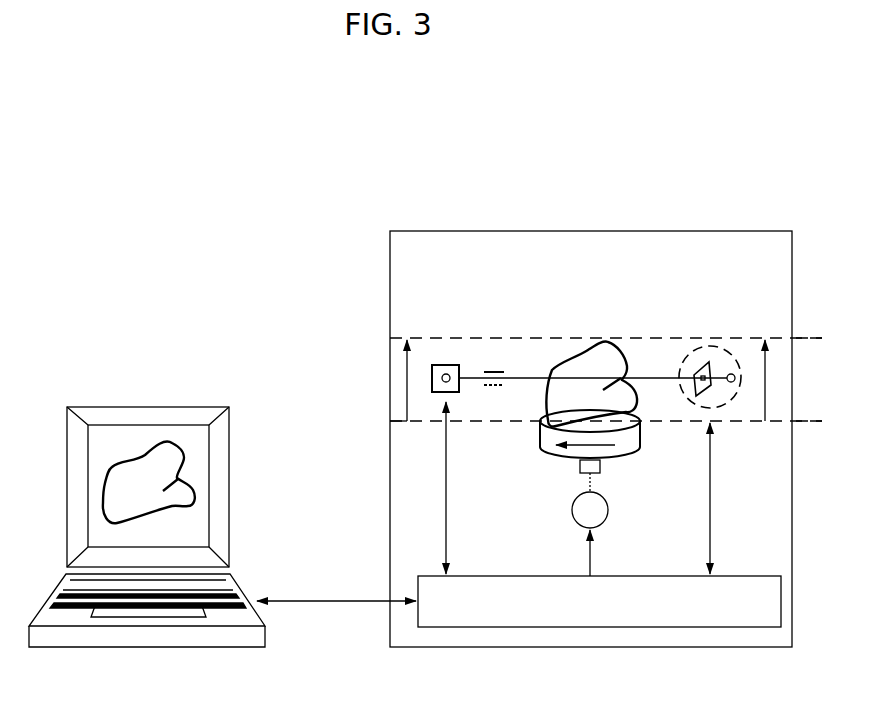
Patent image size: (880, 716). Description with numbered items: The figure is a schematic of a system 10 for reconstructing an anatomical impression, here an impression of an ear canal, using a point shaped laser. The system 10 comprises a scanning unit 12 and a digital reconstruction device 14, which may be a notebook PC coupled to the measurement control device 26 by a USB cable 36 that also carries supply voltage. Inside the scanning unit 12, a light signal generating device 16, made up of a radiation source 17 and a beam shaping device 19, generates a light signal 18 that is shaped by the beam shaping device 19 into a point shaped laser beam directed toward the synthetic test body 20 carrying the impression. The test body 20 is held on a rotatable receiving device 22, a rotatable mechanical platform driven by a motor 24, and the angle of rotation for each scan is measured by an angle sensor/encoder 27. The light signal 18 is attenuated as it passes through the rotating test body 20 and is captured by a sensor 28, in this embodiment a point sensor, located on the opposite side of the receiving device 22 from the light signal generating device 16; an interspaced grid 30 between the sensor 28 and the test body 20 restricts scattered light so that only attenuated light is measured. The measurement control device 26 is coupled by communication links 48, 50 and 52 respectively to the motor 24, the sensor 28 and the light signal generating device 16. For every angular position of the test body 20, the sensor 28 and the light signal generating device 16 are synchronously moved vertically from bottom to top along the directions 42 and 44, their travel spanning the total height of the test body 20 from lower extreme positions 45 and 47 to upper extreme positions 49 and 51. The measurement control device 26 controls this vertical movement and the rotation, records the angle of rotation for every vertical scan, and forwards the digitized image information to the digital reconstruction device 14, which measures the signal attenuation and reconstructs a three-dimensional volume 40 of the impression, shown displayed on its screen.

The system 10 is at (268, 192).
The scanning unit 12 is at (376, 272).
The digital reconstruction device 14 is at (180, 390).
The light signal generating device 16 is at (717, 344).
The radiation source 17 is at (734, 374).
The light signal 18 is at (668, 378).
The beam shaping device 19 is at (709, 362).
The test body 20 is at (608, 347).
The rotatable receiving device 22 is at (642, 448).
The motor 24 is at (610, 510).
The measurement control device 26 is at (782, 603).
The angle sensor/encoder 27 is at (585, 470).
The sensor 28 is at (443, 364).
The interspaced grid 30 is at (495, 371).
The USB cable 36 is at (350, 597).
The three-dimensional volume 40 is at (194, 456).
The vertical motion direction of the sensor 42 is at (406, 383).
The vertical motion direction of the light signal generating device 44 is at (768, 383).
The lower extreme position of the sensor 45 is at (393, 426).
The lower extreme position of the light signal generating device 47 is at (770, 422).
The communication link to the motor 48 is at (592, 556).
The upper extreme position of the sensor 49 is at (393, 338).
The communication link to the sensor 50 is at (448, 546).
The upper extreme position of the light signal generating device 51 is at (770, 339).
The communication link to the light signal generating device 52 is at (712, 537).